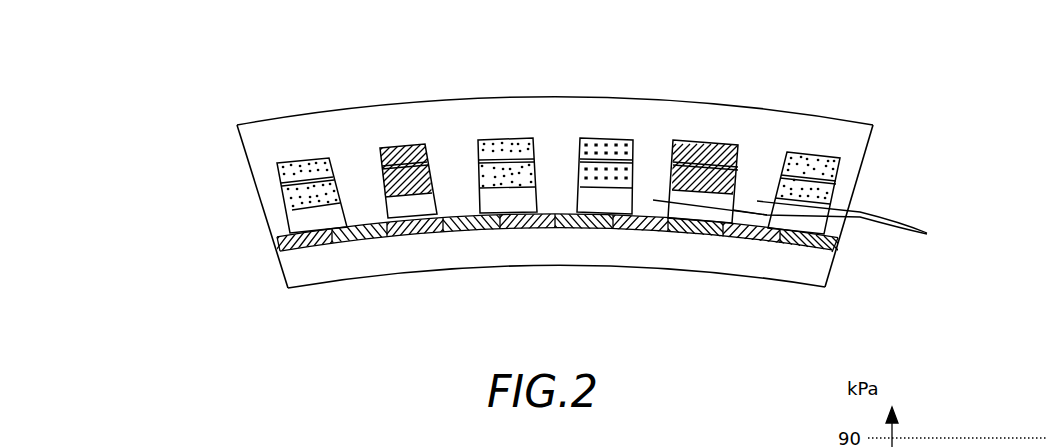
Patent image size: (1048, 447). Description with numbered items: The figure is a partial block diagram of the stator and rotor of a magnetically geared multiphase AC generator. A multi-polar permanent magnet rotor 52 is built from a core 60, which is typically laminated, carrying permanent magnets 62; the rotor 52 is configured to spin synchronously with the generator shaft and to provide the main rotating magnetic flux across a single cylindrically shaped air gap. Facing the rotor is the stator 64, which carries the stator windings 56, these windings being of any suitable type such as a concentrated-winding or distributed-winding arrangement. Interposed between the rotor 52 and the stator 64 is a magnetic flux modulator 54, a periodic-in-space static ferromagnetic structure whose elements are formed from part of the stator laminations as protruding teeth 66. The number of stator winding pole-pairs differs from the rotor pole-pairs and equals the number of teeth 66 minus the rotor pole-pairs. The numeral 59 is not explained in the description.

The multi-polar permanent magnet rotor 52 is at (838, 251).
The magnetic flux modulator 54 is at (863, 197).
The stator windings 56 is at (493, 147).
The edge of adhesive layer 59 is at (277, 239).
The core 60 is at (527, 253).
The permanent magnets 62 is at (645, 228).
The stator 64 is at (545, 112).
The protruding teeth 66 is at (927, 233).